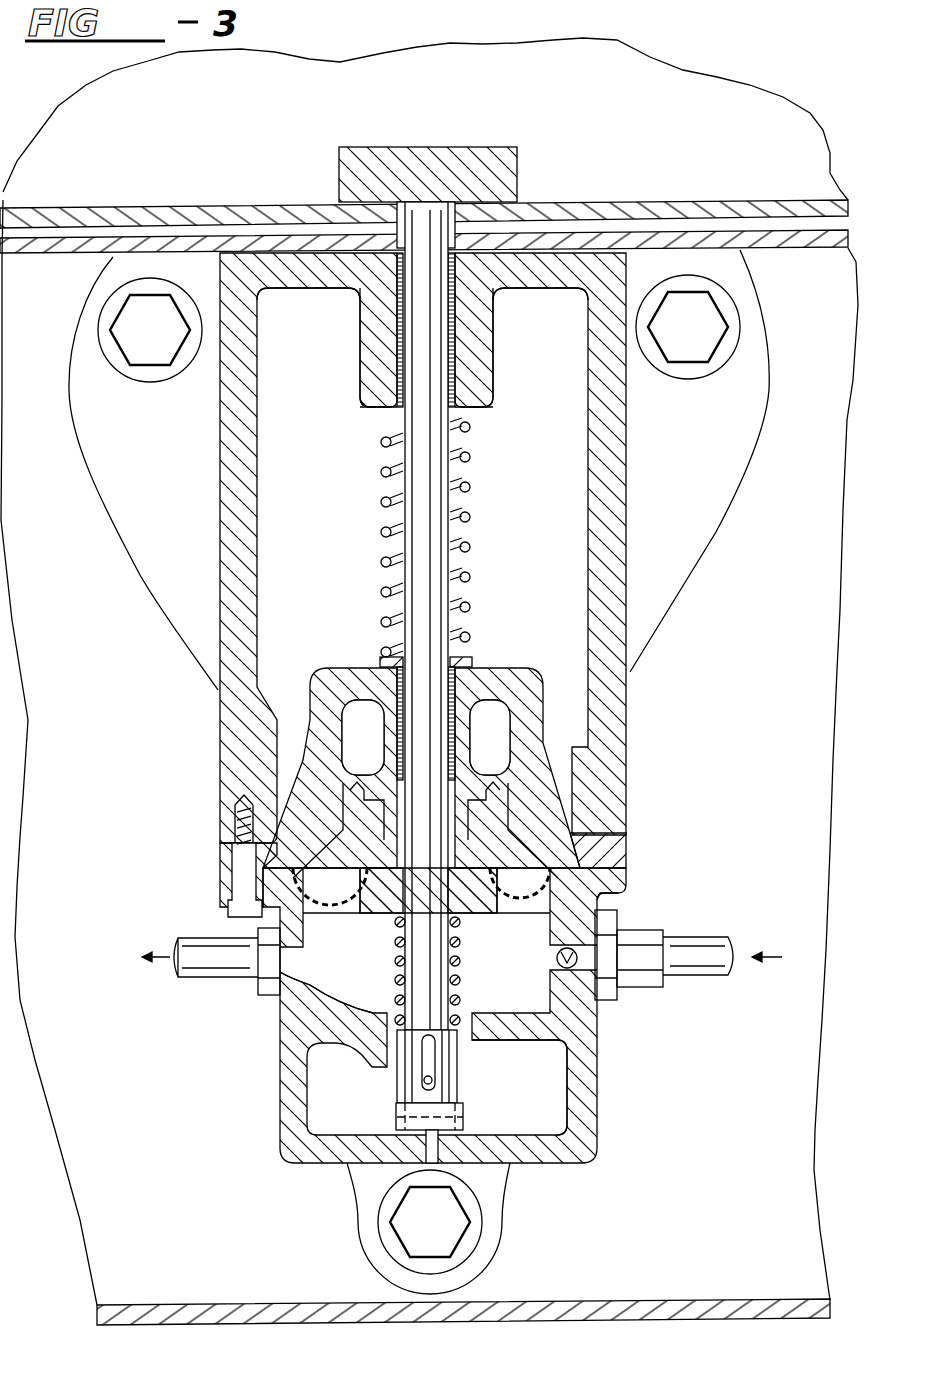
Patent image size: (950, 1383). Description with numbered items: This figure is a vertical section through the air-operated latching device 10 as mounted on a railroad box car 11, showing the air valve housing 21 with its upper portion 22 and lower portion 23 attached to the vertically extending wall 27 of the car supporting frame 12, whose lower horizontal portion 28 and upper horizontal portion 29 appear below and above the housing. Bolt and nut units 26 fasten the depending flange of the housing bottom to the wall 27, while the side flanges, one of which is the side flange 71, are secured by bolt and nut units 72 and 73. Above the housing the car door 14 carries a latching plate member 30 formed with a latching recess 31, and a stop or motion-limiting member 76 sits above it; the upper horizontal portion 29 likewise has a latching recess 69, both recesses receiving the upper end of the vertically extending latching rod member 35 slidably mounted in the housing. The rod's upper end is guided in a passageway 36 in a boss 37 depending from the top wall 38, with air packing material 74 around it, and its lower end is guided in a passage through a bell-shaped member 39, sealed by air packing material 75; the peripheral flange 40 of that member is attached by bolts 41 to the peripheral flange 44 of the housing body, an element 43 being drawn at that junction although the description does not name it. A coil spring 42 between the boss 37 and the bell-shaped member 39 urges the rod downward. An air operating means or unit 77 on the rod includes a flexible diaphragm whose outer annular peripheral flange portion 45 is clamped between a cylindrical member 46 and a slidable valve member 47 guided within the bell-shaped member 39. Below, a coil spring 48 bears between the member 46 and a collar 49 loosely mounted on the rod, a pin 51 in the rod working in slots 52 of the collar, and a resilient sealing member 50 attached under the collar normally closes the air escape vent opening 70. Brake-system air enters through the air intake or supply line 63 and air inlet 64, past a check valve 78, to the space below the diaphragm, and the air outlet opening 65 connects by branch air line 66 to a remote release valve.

The air-operated car door latching device 10 is at (436, 979).
The railroad box car 11 is at (453, 580).
The supporting frame 12 is at (429, 681).
The car door 14 is at (672, 84).
The air valve housing 21 is at (452, 580).
The upper portion of the air valve housing 22 is at (620, 572).
The lower portion of the air valve housing 23 is at (592, 1072).
The bolt and nut units 26 is at (450, 1232).
The vertically extending wall 27 is at (790, 1182).
The lower horizontal portion 28 is at (650, 1292).
The upper horizontal portion 29 is at (795, 248).
The latching plate member 30 is at (424, 223).
The latching recess 31 is at (463, 212).
The latching rod member 35 is at (440, 496).
The passageway 36 is at (395, 408).
The boss 37 is at (493, 378).
The top wall / passageway 38 is at (540, 275).
The bell-shaped member 39 is at (543, 712).
The peripheral flange 40 is at (615, 847).
The bolts 41 is at (260, 918).
The coil spring / flexible diaphragm member 42 is at (470, 574).
The ring 43 is at (600, 832).
The peripheral flange 44 is at (612, 886).
The outer annular peripheral flange portion 45 is at (352, 905).
The cylindrical member 46 is at (465, 905).
The slidable valve member 47 is at (370, 826).
The coil spring 48 is at (460, 1002).
The collar 49 is at (387, 1073).
The sealing member 50 is at (458, 1118).
The pin 51 is at (410, 1094).
The slots 52 is at (425, 1045).
The air intake or supply line 63 is at (705, 965).
The air inlet 64 is at (590, 985).
The air outlet opening 65 is at (300, 960).
The branch air line 66 is at (240, 982).
The latching recess 69 is at (416, 215).
The air escape vent opening 70 is at (745, 458).
The side flange 71 is at (145, 520).
The bolt and nut unit 72 is at (700, 330).
The bolt and nut unit 73 is at (148, 350).
The air packing material 74 is at (397, 360).
The air packing material 75 is at (393, 690).
The stop or motion-limiting member 76 is at (447, 167).
The air operating means or unit 77 is at (338, 895).
The check valve 78 is at (558, 955).